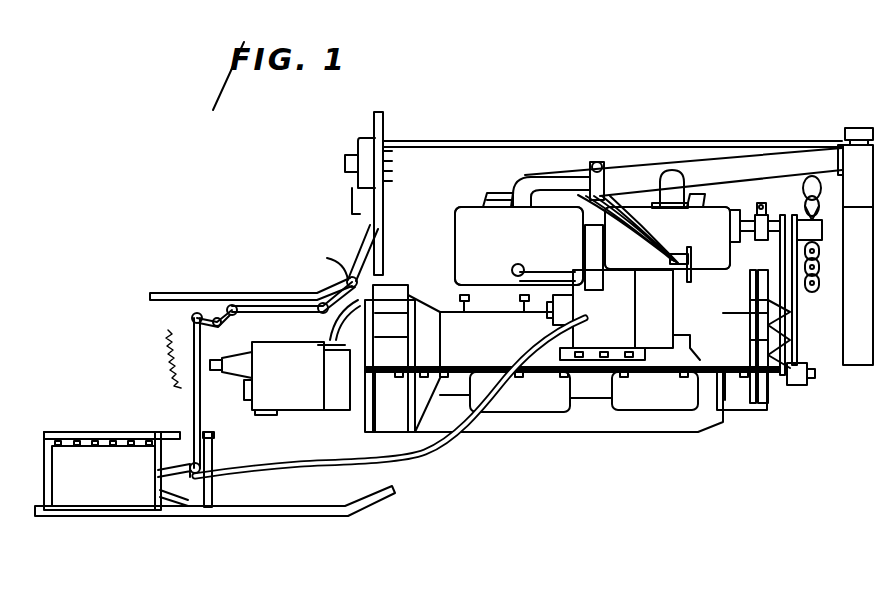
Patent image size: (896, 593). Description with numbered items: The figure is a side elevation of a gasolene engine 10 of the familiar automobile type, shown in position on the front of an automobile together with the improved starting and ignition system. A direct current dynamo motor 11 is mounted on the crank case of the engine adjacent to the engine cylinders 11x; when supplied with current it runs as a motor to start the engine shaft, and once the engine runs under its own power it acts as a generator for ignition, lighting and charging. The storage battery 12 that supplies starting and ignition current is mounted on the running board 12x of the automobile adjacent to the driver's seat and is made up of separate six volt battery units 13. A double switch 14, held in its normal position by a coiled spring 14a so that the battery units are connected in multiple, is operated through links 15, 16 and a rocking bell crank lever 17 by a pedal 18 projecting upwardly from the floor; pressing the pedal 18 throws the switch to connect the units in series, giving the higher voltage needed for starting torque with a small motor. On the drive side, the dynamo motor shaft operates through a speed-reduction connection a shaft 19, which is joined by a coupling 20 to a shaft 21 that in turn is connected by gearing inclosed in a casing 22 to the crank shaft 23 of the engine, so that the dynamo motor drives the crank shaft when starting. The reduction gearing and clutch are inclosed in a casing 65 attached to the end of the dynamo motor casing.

The gasolene engine 10 is at (449, 211).
The dynamo motor 11 is at (583, 318).
The engine cylinders 11x is at (592, 246).
The storage battery 12 is at (112, 500).
The running board 12x is at (282, 518).
The battery units 13 is at (285, 357).
The double switch 14 is at (168, 472).
The coiled spring 14a is at (178, 355).
The link 15 is at (200, 406).
The link 16 is at (278, 305).
The rocking bell crank lever 17 is at (223, 293).
The pedal 18 is at (318, 262).
The shaft 19 is at (675, 306).
The coupling 20 is at (705, 300).
The shaft 21 is at (723, 313).
The casing 22 is at (720, 318).
The crank shaft 23 is at (810, 366).
The casing 65 is at (690, 348).